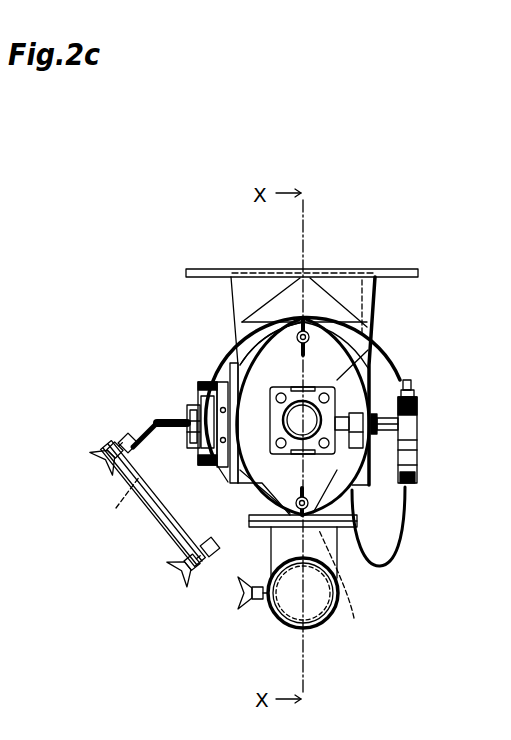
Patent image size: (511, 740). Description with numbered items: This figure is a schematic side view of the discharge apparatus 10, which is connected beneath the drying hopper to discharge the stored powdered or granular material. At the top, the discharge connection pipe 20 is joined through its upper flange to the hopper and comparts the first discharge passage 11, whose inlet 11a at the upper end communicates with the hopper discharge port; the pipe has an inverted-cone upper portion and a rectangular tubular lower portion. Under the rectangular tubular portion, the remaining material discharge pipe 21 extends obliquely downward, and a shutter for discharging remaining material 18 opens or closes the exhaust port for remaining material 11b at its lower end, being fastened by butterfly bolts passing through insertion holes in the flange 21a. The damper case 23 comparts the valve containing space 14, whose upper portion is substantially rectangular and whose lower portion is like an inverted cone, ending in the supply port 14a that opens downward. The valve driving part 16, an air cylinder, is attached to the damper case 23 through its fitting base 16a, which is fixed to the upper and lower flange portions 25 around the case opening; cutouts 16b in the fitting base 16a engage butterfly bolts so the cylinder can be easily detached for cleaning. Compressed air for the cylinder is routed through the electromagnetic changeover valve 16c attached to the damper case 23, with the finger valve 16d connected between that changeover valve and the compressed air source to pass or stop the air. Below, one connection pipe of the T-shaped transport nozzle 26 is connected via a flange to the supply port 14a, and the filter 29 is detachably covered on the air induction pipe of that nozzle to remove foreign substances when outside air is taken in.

The discharge apparatus 10 is at (125, 134).
The first discharge passage 11 is at (243, 330).
The inlet 11a is at (365, 283).
The exhaust port for remaining material 11b is at (116, 503).
The valve containing space 14 is at (342, 496).
The supply port 14a is at (347, 588).
The valve driving part 16 is at (262, 398).
The fitting base 16a is at (362, 368).
The cutouts 16b is at (368, 337).
The electromagnetic changeover valve 16c is at (418, 428).
The finger valve 16d is at (177, 410).
The shutter for discharging remaining material 18 is at (165, 523).
The discharge connection pipe 20 is at (372, 299).
The remaining material discharge pipe 21 is at (153, 425).
The flange 21a is at (120, 437).
The damper case 23 is at (243, 345).
The flange portions 25 is at (322, 330).
The transport nozzle 26 is at (347, 559).
The filter 29 is at (312, 628).